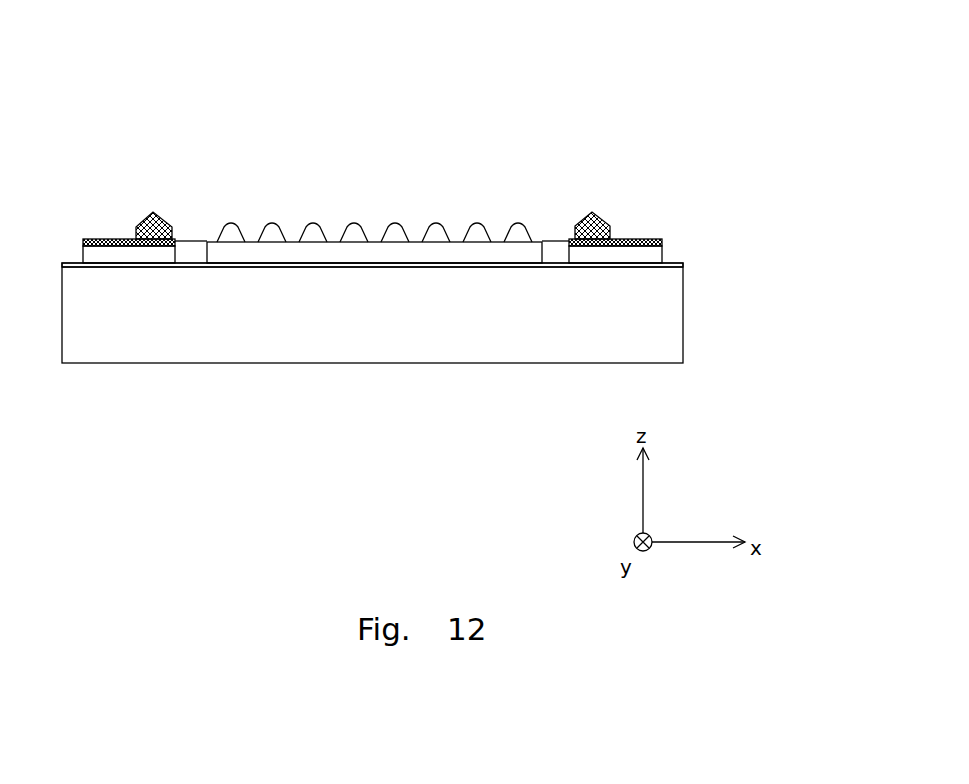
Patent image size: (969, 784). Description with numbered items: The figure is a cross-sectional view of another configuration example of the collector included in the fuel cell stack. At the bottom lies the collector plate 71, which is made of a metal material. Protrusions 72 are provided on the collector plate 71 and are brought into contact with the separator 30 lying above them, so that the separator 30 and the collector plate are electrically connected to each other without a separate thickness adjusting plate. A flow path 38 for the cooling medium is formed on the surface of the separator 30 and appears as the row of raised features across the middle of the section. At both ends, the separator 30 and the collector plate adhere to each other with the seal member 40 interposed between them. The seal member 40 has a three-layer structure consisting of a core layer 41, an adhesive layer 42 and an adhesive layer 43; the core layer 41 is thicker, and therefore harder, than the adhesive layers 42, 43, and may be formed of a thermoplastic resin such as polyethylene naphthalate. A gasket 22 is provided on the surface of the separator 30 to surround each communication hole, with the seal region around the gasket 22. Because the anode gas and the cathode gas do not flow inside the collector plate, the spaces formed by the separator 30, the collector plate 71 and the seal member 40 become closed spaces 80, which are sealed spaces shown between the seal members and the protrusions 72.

The gasket 22 is at (142, 214).
The separator 30 is at (628, 240).
The flow path 38 is at (436, 222).
The seal member 40 is at (452, 254).
The core layer 41 is at (664, 257).
The adhesive layer 42 is at (664, 245).
The adhesive layer 43 is at (424, 286).
The collector plate 71 is at (672, 326).
The protrusions 72 is at (378, 255).
The closed spaces 80 is at (193, 247).